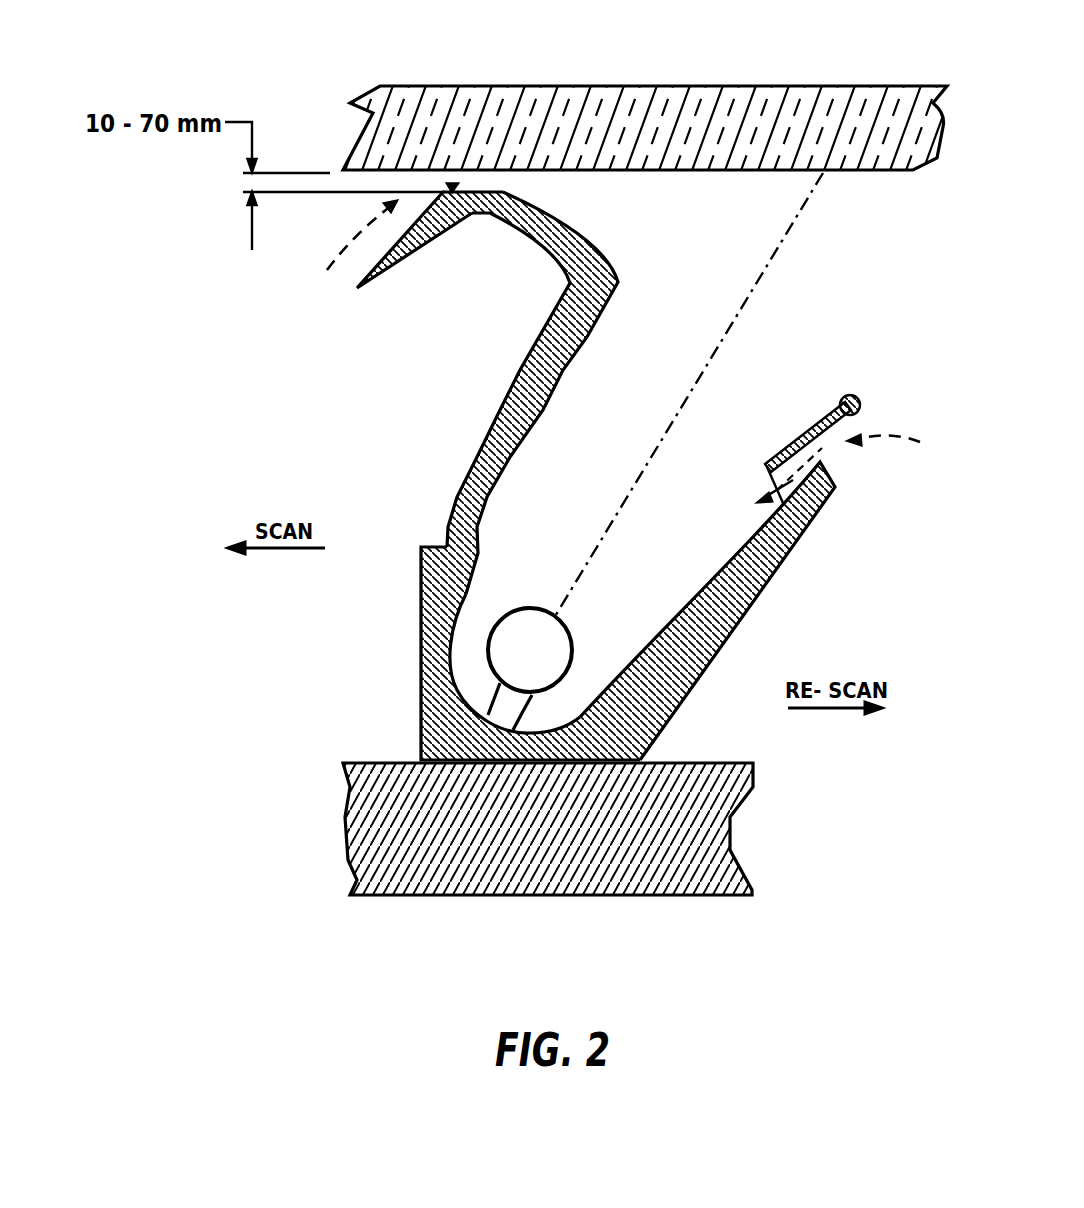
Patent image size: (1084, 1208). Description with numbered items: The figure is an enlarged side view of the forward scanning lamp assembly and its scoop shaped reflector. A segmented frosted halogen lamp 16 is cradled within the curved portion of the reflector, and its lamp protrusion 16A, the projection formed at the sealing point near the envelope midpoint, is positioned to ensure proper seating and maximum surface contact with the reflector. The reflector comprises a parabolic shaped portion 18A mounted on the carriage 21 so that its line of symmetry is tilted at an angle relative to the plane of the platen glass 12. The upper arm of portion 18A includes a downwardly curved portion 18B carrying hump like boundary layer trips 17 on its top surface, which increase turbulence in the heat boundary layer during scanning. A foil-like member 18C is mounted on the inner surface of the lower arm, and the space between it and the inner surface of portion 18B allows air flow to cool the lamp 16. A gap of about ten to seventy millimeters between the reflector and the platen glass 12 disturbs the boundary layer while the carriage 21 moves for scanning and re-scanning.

The platen glass 12 is at (778, 88).
The lamp 16 is at (515, 633).
The lamp protrusion 16A is at (527, 710).
The boundary layer trips 17 is at (452, 187).
The parabolic shaped portion 18A is at (814, 589).
The downwardly curved portion 18B is at (499, 263).
The foil-like member 18C is at (805, 442).
The carriage 21 is at (727, 818).